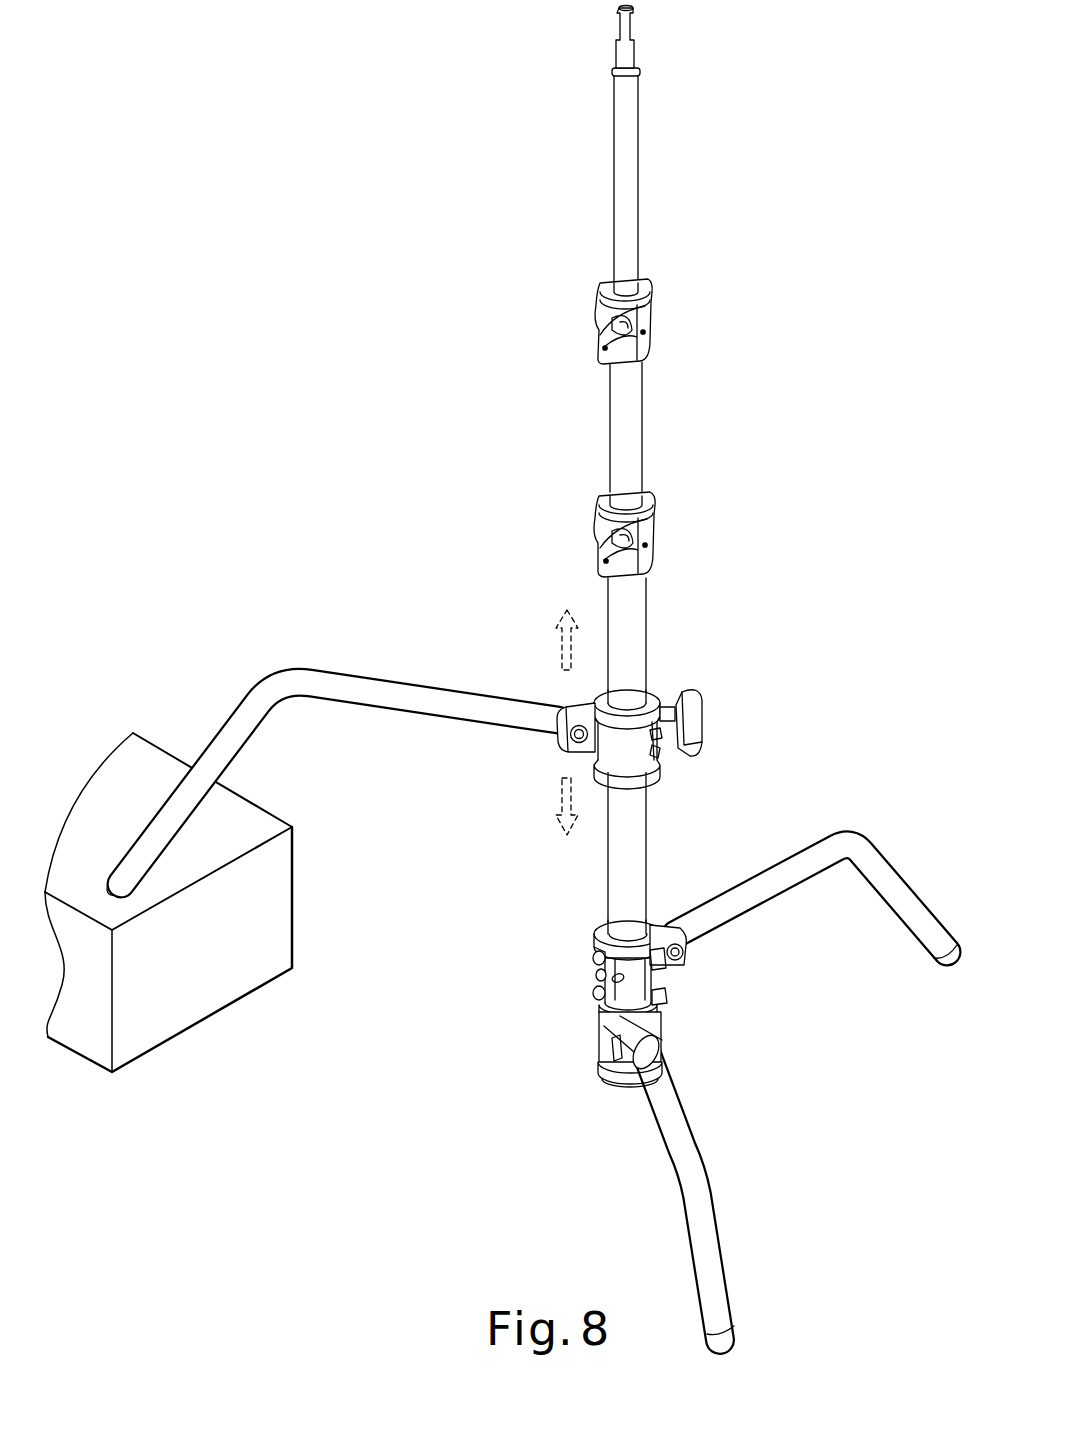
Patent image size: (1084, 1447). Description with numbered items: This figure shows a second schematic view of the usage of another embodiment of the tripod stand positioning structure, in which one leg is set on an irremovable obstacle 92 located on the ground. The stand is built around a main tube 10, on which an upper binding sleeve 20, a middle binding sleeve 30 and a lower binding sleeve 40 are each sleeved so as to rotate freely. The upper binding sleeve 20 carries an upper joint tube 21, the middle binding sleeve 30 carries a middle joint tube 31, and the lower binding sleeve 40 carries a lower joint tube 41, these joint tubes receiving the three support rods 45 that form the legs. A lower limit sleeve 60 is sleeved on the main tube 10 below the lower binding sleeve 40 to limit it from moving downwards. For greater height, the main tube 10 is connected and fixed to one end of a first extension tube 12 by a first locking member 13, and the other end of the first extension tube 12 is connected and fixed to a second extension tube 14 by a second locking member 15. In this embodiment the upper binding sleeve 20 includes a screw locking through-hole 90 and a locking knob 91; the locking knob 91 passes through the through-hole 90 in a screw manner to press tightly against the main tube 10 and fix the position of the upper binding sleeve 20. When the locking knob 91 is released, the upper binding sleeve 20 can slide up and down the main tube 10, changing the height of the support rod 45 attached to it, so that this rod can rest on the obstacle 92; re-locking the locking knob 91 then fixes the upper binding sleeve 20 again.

The main tube 10 is at (625, 605).
The first extension tube 12 is at (622, 415).
The first locking member 13 is at (665, 508).
The second extension tube 14 is at (622, 170).
The second locking member 15 is at (660, 292).
The upper binding sleeve 20 is at (660, 676).
The upper joint tube 21 is at (563, 723).
The middle binding sleeve 30 is at (580, 936).
The middle joint tube 31 is at (683, 943).
The lower binding sleeve 40 is at (588, 1025).
The lower joint tube 41 is at (648, 1028).
The support rods 45 is at (305, 677).
The lower limit sleeve 60 is at (603, 1087).
The screw locking through-hole 90 is at (675, 690).
The locking knob 91 is at (688, 714).
The obstacle 92 is at (275, 890).